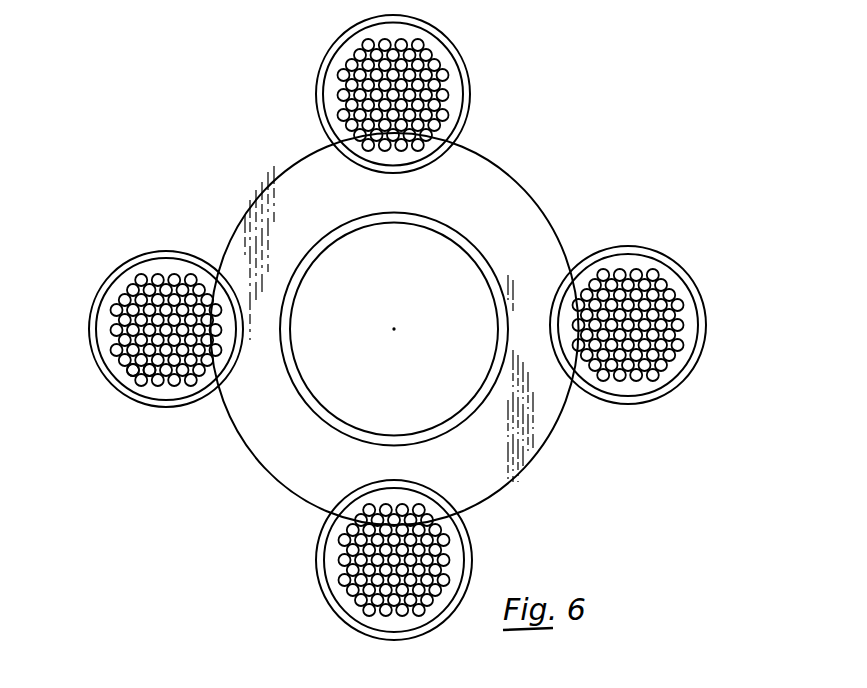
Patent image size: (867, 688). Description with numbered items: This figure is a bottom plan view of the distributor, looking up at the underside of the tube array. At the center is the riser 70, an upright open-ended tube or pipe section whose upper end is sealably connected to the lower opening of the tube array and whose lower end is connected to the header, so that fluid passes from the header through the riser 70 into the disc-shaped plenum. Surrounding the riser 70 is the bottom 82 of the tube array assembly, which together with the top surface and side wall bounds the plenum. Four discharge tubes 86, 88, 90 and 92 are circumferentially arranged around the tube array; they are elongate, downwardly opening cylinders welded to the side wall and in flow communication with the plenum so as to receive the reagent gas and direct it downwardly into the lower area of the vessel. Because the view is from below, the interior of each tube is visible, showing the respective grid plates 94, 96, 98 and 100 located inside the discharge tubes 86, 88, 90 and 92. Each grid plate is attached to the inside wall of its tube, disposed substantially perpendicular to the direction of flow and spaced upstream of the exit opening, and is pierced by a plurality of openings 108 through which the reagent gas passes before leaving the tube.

The riser 70 is at (460, 233).
The bottom 82 is at (483, 442).
The discharge tube 86 is at (145, 257).
The discharge tube 88 is at (320, 538).
The discharge tube 90 is at (643, 250).
The discharge tube 92 is at (320, 79).
The grid plate 94 is at (103, 313).
The grid plate 96 is at (452, 547).
The grid plate 98 is at (685, 327).
The grid plate 100 is at (450, 80).
The openings 108 is at (146, 378).